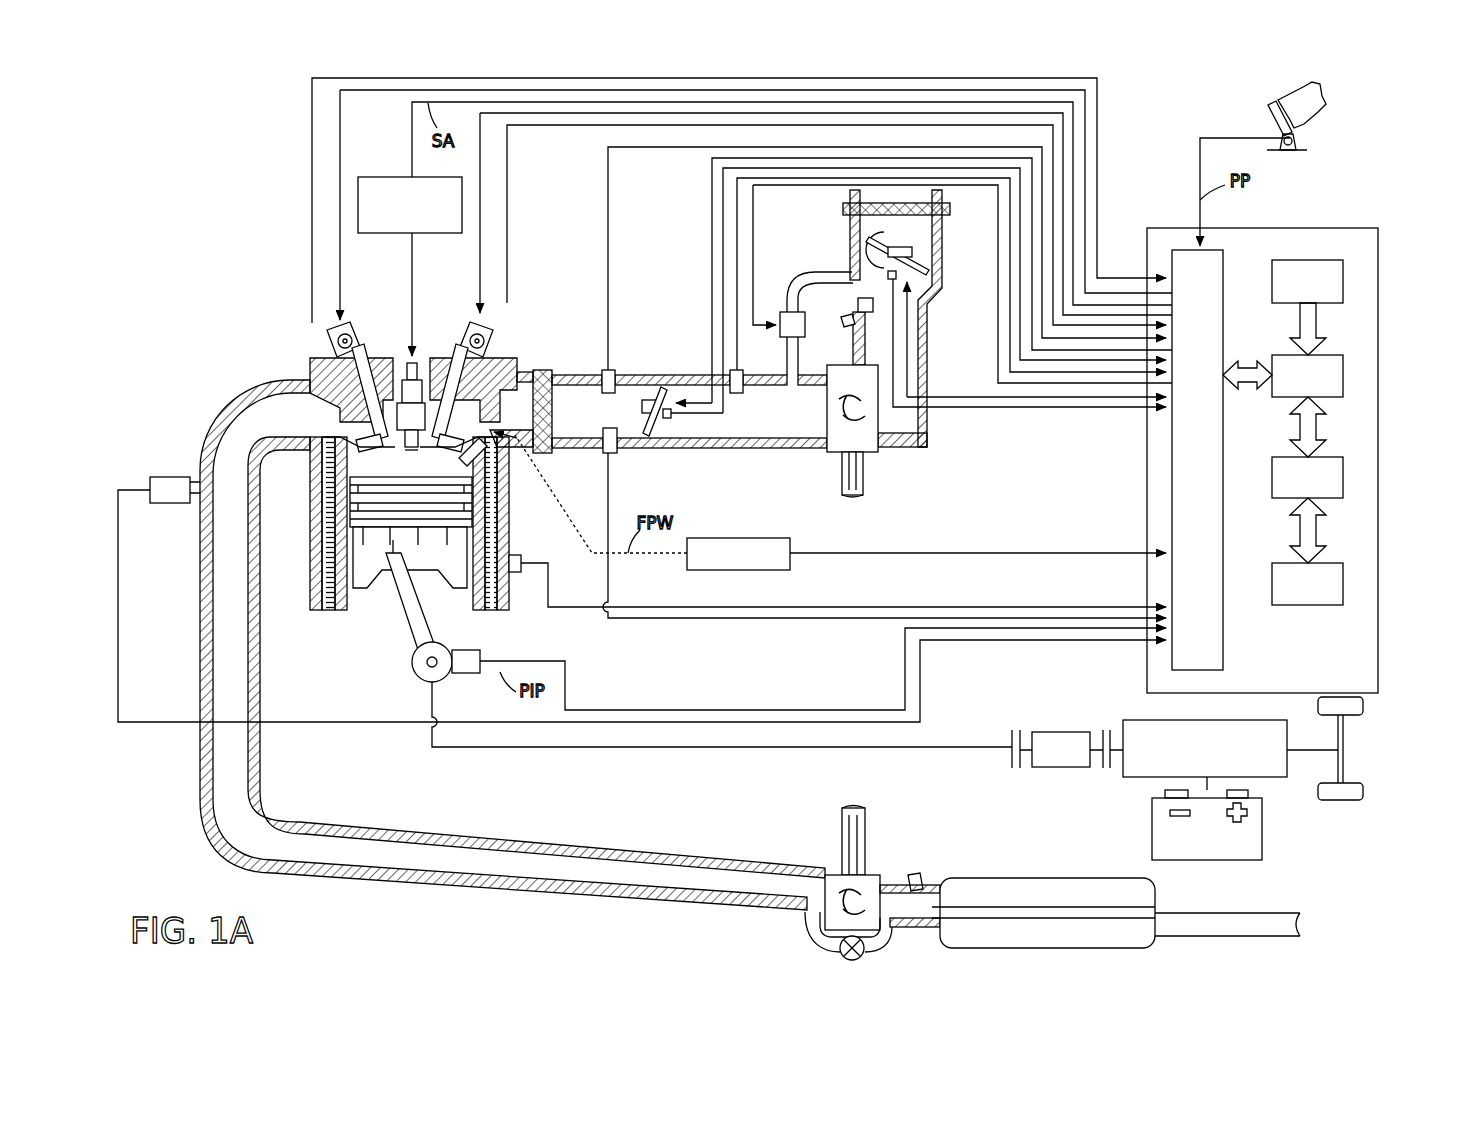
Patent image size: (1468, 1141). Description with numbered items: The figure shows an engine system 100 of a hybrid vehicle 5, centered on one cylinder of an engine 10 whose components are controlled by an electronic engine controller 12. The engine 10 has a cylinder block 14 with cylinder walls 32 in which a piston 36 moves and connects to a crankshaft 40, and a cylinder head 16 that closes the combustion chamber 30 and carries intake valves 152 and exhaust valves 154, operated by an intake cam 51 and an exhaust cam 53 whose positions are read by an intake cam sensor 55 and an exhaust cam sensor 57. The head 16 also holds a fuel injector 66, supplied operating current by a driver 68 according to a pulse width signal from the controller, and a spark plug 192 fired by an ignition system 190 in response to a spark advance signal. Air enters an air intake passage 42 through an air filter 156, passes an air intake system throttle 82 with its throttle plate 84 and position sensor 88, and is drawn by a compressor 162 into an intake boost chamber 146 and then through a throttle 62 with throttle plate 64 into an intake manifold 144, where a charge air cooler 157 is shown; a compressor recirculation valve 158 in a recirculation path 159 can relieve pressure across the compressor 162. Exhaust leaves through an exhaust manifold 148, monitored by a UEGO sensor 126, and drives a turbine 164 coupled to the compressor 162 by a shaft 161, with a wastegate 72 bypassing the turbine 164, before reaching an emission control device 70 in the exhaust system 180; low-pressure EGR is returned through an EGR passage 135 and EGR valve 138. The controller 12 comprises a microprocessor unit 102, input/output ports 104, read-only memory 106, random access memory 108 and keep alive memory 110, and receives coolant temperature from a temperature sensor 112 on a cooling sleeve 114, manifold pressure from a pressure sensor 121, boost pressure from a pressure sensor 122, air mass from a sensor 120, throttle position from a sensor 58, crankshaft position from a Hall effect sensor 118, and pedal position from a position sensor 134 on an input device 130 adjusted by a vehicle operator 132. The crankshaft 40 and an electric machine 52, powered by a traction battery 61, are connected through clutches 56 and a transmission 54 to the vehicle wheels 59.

The engine system 100 is at (160, 135).
The engine 10 is at (240, 292).
The electronic engine controller 12 is at (1360, 228).
The vehicle 5 is at (1390, 735).
The cylinder block 14 is at (303, 505).
The cylinder head 16 is at (522, 360).
The combustion chamber 30 is at (347, 533).
The cylinder walls 32 is at (350, 598).
The piston 36 is at (393, 562).
The crankshaft 40 is at (428, 683).
The air intake passage 42 is at (896, 318).
The intake cam 51 is at (462, 318).
The electric machine 52 is at (1060, 768).
The exhaust cam 53 is at (363, 318).
The transmission 54 is at (1265, 777).
The intake cam sensor 55 is at (492, 335).
The clutch 56 is at (1012, 735).
The exhaust cam sensor 57 is at (326, 338).
The throttle position sensor 58 is at (667, 425).
The vehicle wheels 59 is at (1340, 800).
The traction battery 61 is at (1207, 860).
The throttle 62 is at (655, 392).
The throttle plate 64 is at (668, 390).
The fuel injector 66 is at (500, 456).
The driver 68 is at (767, 538).
The emission control device 70 is at (940, 945).
The wastegate 72 is at (838, 950).
The air intake system throttle 82 is at (887, 251).
The throttle plate 84 is at (857, 243).
The position sensor 88 is at (866, 262).
The microprocessor unit 102 is at (1343, 375).
The input/output ports 104 is at (1228, 258).
The read-only memory 106 is at (1343, 278).
The random access memory 108 is at (1343, 475).
The keep alive memory 110 is at (1343, 580).
The temperature sensor 112 is at (522, 557).
The cooling sleeve 114 is at (507, 598).
The Hall effect sensor 118 is at (462, 675).
The air mass sensor 120 is at (610, 455).
The pressure sensor 121 is at (610, 368).
The pressure sensor 122 is at (742, 375).
The UEGO sensor 126 is at (150, 480).
The input device 130 is at (1275, 108).
The vehicle operator 132 is at (1325, 110).
The position sensor 134 is at (1300, 140).
The EGR passage 135 is at (851, 327).
The EGR valve 138 is at (858, 305).
The intake manifold 144 is at (689, 411).
The intake boost chamber 146 is at (828, 411).
The exhaust manifold 148 is at (512, 645).
The intake valves 152 is at (484, 437).
The exhaust valves 154 is at (327, 402).
The air filter 156 is at (950, 209).
The charge air cooler 157 is at (553, 453).
The compressor recirculation valve 158 is at (786, 312).
The compressor recirculation path 159 is at (850, 322).
The shaft 161 is at (870, 478).
The compressor 162 is at (880, 452).
The turbine 164 is at (832, 875).
The exhaust system 180 is at (458, 900).
The ignition system 190 is at (398, 177).
The spark plug 192 is at (428, 345).